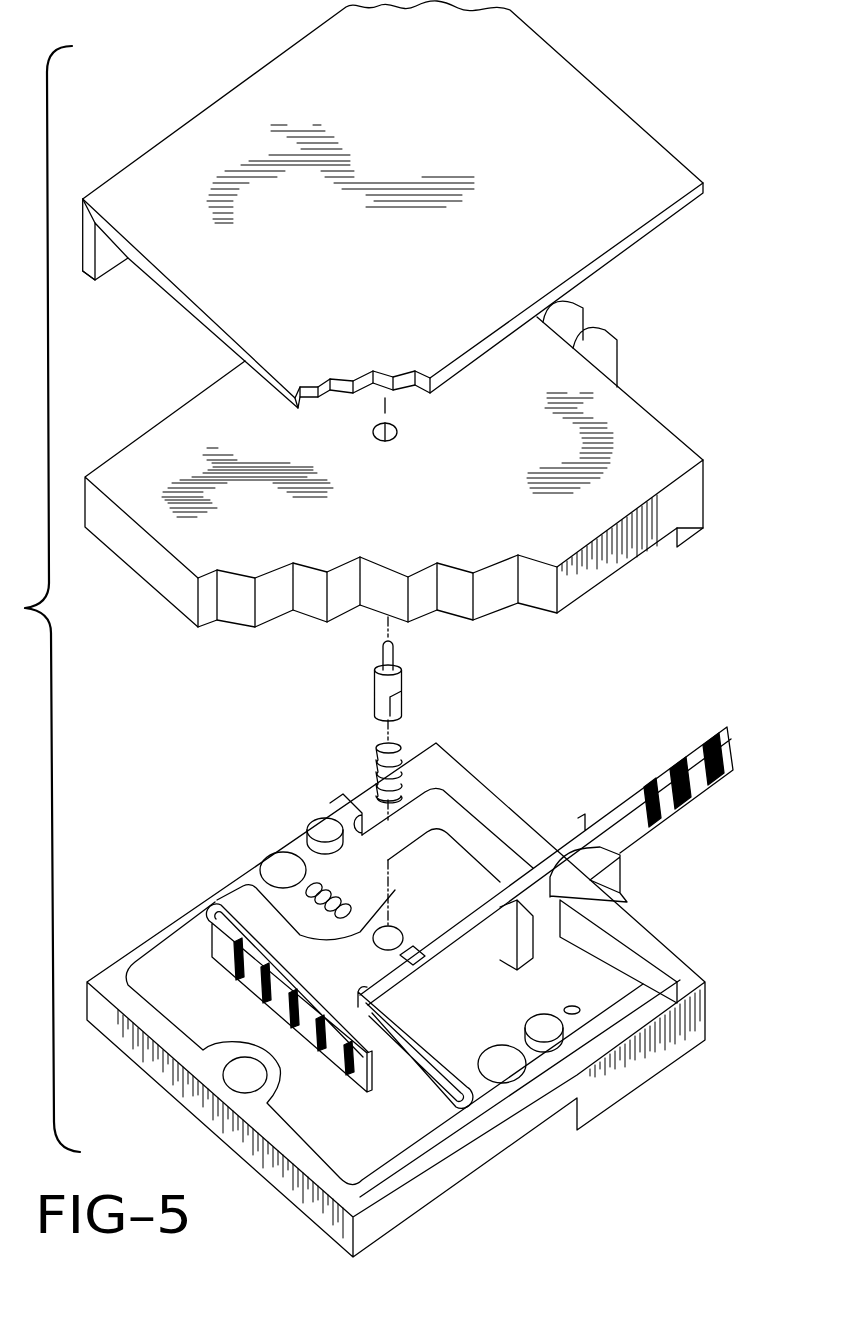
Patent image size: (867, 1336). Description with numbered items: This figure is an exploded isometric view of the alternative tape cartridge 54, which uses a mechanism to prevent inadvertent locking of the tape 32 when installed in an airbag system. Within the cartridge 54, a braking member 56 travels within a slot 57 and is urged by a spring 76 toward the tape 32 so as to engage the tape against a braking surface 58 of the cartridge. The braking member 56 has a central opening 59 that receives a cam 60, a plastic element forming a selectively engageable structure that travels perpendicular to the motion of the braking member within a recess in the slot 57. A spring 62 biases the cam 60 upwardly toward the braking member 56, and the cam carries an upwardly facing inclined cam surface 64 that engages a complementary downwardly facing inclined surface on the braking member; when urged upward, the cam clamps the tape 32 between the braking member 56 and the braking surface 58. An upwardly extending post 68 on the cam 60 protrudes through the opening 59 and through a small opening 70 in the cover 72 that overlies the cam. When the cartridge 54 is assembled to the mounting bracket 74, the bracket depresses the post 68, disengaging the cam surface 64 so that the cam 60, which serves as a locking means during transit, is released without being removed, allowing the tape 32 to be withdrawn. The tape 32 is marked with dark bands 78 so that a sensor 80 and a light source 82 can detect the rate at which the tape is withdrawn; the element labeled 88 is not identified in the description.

The tape 32 is at (552, 857).
The tape cartridge 54 is at (416, 983).
The braking member 56 is at (380, 940).
The slot 57 is at (307, 945).
The braking surface 58 is at (413, 962).
The central opening 59 is at (378, 965).
The cam 60 is at (386, 675).
The spring 62 is at (378, 748).
The inclined cam surface 64 is at (400, 688).
The post 68 is at (390, 655).
The opening 70 is at (395, 438).
The cover 72 is at (414, 464).
The mounting bracket 74 is at (185, 297).
The spring 76 is at (320, 887).
The dark bands 78 is at (682, 795).
The sensor 80 is at (482, 883).
The light source 82 is at (533, 918).
The electrode stripe 88 is at (720, 773).